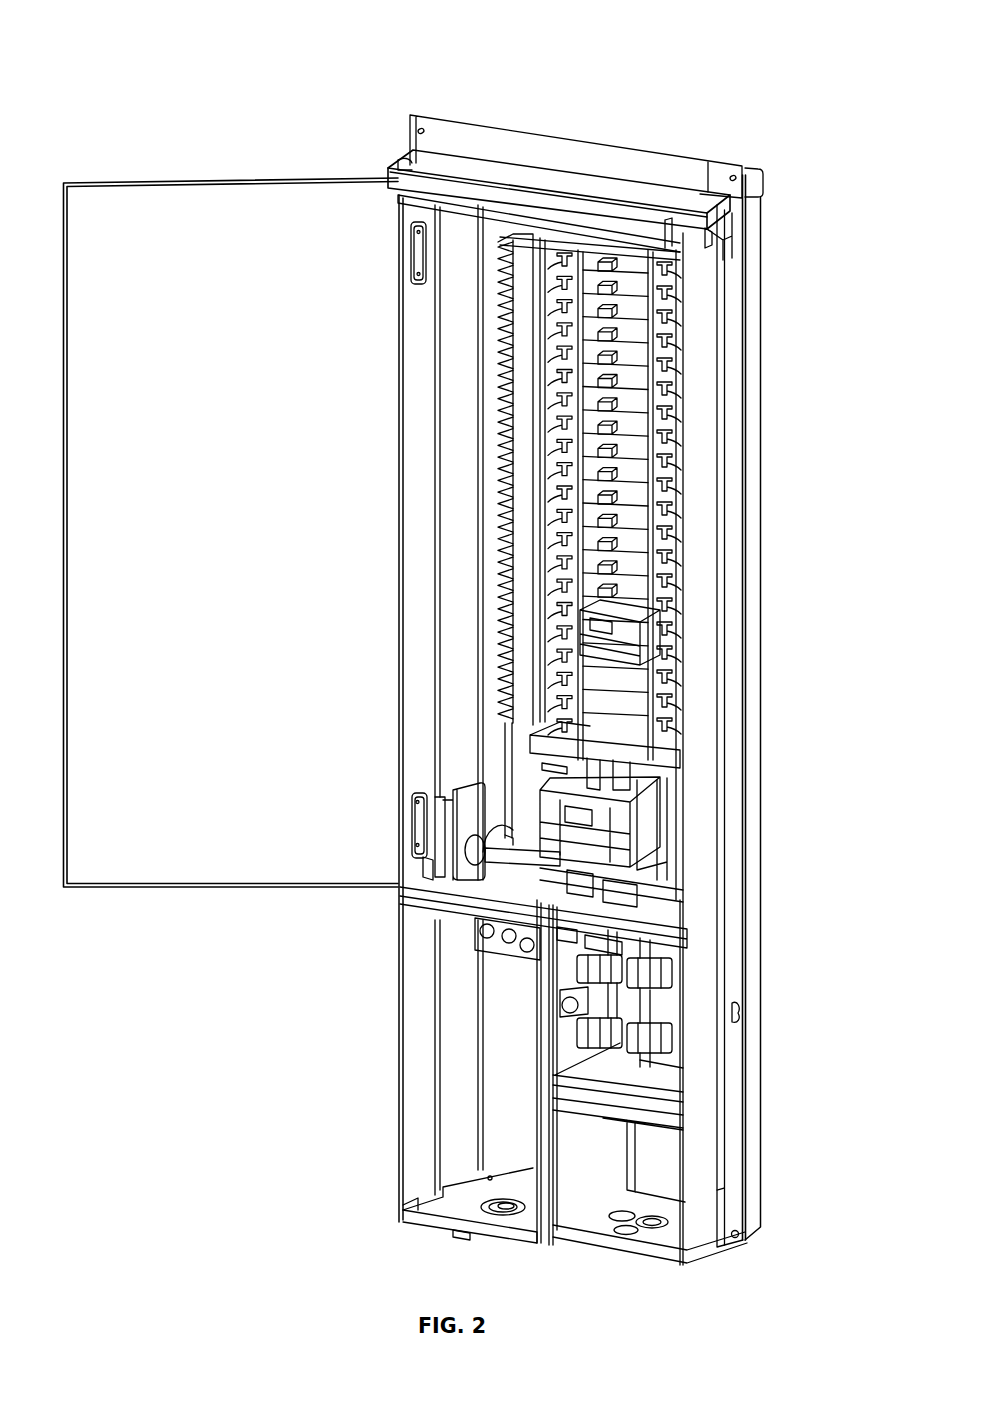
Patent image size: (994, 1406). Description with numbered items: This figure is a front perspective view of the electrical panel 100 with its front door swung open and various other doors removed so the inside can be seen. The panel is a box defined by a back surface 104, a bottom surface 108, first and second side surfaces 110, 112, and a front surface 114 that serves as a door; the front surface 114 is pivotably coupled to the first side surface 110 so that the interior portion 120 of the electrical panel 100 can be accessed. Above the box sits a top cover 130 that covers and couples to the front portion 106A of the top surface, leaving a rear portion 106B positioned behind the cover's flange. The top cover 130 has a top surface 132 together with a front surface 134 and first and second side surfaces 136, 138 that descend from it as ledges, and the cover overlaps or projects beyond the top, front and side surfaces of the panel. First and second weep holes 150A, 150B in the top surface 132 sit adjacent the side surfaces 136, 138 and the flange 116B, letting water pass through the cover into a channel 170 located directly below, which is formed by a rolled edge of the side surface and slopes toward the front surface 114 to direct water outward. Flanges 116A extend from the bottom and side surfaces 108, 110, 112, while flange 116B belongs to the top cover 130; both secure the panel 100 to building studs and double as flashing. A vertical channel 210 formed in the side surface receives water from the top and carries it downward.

The electrical panel 100 is at (226, 62).
The back surface 104 is at (762, 363).
The front portion of the top surface 106A is at (410, 163).
The rear portion of the top surface 106B is at (752, 176).
The bottom surface 108 is at (572, 1247).
The first side surface 110 is at (400, 1053).
The second side surface 112 is at (748, 718).
The front surface 114 is at (113, 855).
The flange 116A is at (748, 468).
The flange of the top cover 116B is at (740, 170).
The interior portion 120 is at (642, 550).
The top cover 130 is at (562, 182).
The top surface of the top cover 132 is at (607, 185).
The front surface of the top cover 134 is at (708, 230).
The first side surface of the top cover 136 is at (712, 213).
The second side surface of the top cover 138 is at (407, 158).
The first weep hole 150A is at (432, 140).
The second weep hole 150B is at (712, 178).
The channel 170 is at (665, 222).
The vertical channel 210 is at (735, 884).